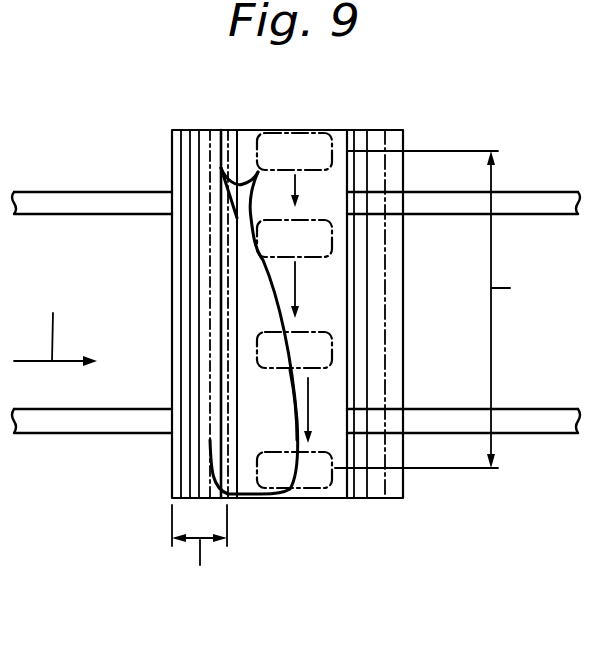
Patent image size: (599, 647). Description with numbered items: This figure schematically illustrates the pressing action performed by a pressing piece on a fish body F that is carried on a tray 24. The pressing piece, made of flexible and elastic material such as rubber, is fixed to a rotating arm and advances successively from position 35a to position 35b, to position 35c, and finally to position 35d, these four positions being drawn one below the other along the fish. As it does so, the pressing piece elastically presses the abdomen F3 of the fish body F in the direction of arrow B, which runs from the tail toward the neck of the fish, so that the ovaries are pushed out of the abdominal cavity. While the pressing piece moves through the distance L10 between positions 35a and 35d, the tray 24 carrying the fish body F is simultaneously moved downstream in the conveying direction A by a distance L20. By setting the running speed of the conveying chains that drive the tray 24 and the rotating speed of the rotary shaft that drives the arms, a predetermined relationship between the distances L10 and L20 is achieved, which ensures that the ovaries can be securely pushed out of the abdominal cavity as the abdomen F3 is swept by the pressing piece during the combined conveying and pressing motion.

The tray 24 is at (245, 150).
The pressing piece position 35a is at (305, 140).
The pressing piece position 35b is at (327, 240).
The pressing piece position 35c is at (333, 348).
The pressing piece position 35d is at (333, 482).
The fish body F is at (245, 330).
The abdomen F3 is at (290, 412).
The conveying direction A is at (55, 322).
The pressing direction B is at (310, 309).
The distance between pressing piece positions L10 is at (446, 309).
The tray travel distance L20 is at (199, 553).